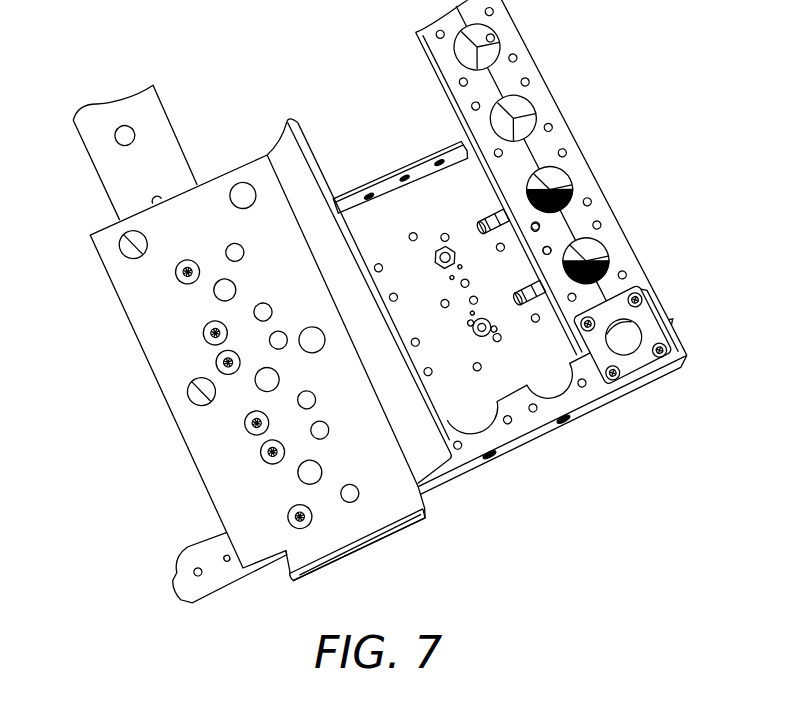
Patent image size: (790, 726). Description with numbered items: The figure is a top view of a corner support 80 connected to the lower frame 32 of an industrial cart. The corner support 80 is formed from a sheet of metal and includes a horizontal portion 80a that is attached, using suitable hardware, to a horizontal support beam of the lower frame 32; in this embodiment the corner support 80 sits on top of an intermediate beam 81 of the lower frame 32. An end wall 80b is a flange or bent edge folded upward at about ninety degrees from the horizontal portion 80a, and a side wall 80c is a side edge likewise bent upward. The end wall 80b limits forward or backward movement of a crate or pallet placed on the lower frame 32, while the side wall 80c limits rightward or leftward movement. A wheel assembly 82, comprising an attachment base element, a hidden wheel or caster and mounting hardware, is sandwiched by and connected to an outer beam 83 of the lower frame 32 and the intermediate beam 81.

The lower frame 32 is at (553, 58).
The corner support 80 is at (333, 169).
The horizontal portion 80a is at (206, 244).
The end wall 80b is at (343, 536).
The side wall 80c is at (337, 265).
The intermediate beam 81 is at (173, 165).
The wheel assembly 82 is at (519, 180).
The outer beam 83 is at (553, 100).